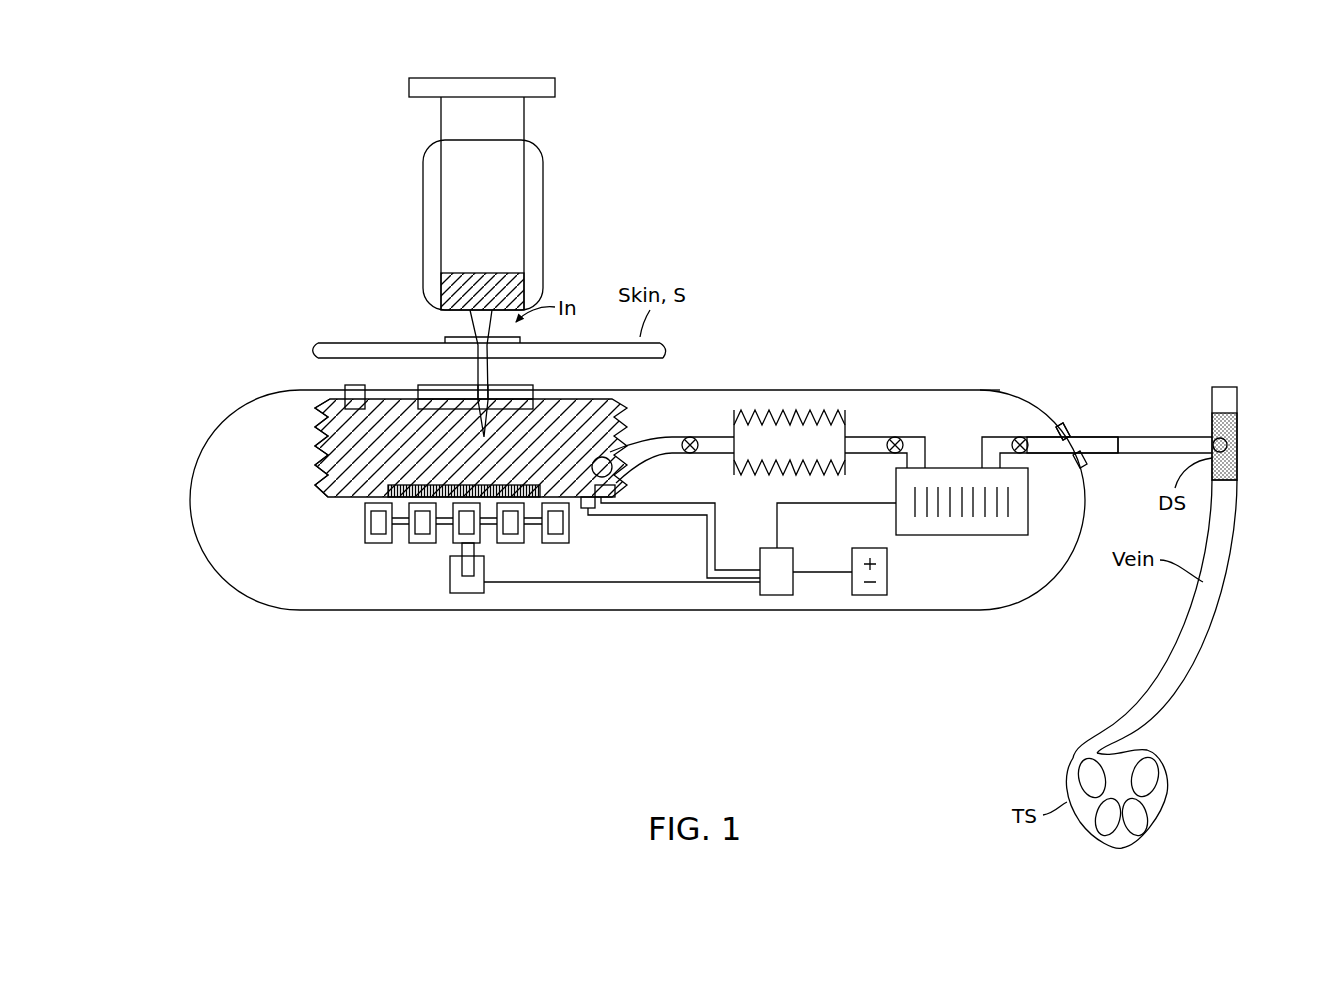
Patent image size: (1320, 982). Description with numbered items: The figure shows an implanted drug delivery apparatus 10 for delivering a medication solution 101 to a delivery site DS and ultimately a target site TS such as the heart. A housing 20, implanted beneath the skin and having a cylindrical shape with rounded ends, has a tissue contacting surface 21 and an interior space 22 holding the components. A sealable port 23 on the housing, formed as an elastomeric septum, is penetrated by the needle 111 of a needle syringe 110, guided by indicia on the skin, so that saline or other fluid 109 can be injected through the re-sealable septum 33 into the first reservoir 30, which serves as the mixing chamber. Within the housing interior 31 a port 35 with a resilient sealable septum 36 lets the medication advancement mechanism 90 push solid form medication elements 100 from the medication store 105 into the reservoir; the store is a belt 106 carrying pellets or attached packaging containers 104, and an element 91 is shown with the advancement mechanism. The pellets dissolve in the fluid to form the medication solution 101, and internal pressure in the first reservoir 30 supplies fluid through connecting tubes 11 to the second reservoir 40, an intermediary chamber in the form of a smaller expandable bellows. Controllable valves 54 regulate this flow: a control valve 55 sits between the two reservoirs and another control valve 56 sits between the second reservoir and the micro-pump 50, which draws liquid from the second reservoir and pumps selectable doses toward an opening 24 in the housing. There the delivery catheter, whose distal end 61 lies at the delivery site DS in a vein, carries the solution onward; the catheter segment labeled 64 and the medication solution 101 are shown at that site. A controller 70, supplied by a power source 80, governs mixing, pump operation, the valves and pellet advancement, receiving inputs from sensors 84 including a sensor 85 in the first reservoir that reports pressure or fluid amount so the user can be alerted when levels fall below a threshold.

The apparatus 10 is at (997, 376).
The connecting tubes 11 is at (645, 437).
The housing 20 is at (193, 463).
The tissue contacting surface 21 is at (193, 535).
The interior space 22 is at (243, 571).
The sealable port 23 is at (516, 386).
The opening 24 is at (1078, 433).
The first reservoir 30 is at (316, 430).
The housing interior 31 is at (316, 450).
The re-sealable septum 33 is at (516, 402).
The port 35 is at (428, 484).
The sealable septum 36 is at (471, 448).
The second reservoir 40 is at (783, 410).
The micro-pump 50 is at (958, 537).
The controllable valves 54 is at (1024, 437).
The control valve 55 is at (690, 437).
The control valve 56 is at (895, 437).
The distal end 61 is at (1105, 437).
The catheter 64 is at (1212, 412).
The controller 70 is at (777, 595).
The power source 80 is at (870, 595).
The sensors 84 is at (588, 510).
The sensor 85 is at (622, 478).
The medication advancement mechanism 90 is at (472, 594).
The connector 91 is at (476, 548).
The solid form medication elements 100 is at (378, 534).
The medication solution 101 is at (497, 476).
The packaging containers 104 is at (365, 522).
The medication store 105 is at (554, 544).
The belt 106 is at (404, 525).
The fluid 109 is at (512, 292).
The needle syringe 110 is at (544, 176).
The needle 111 is at (425, 357).